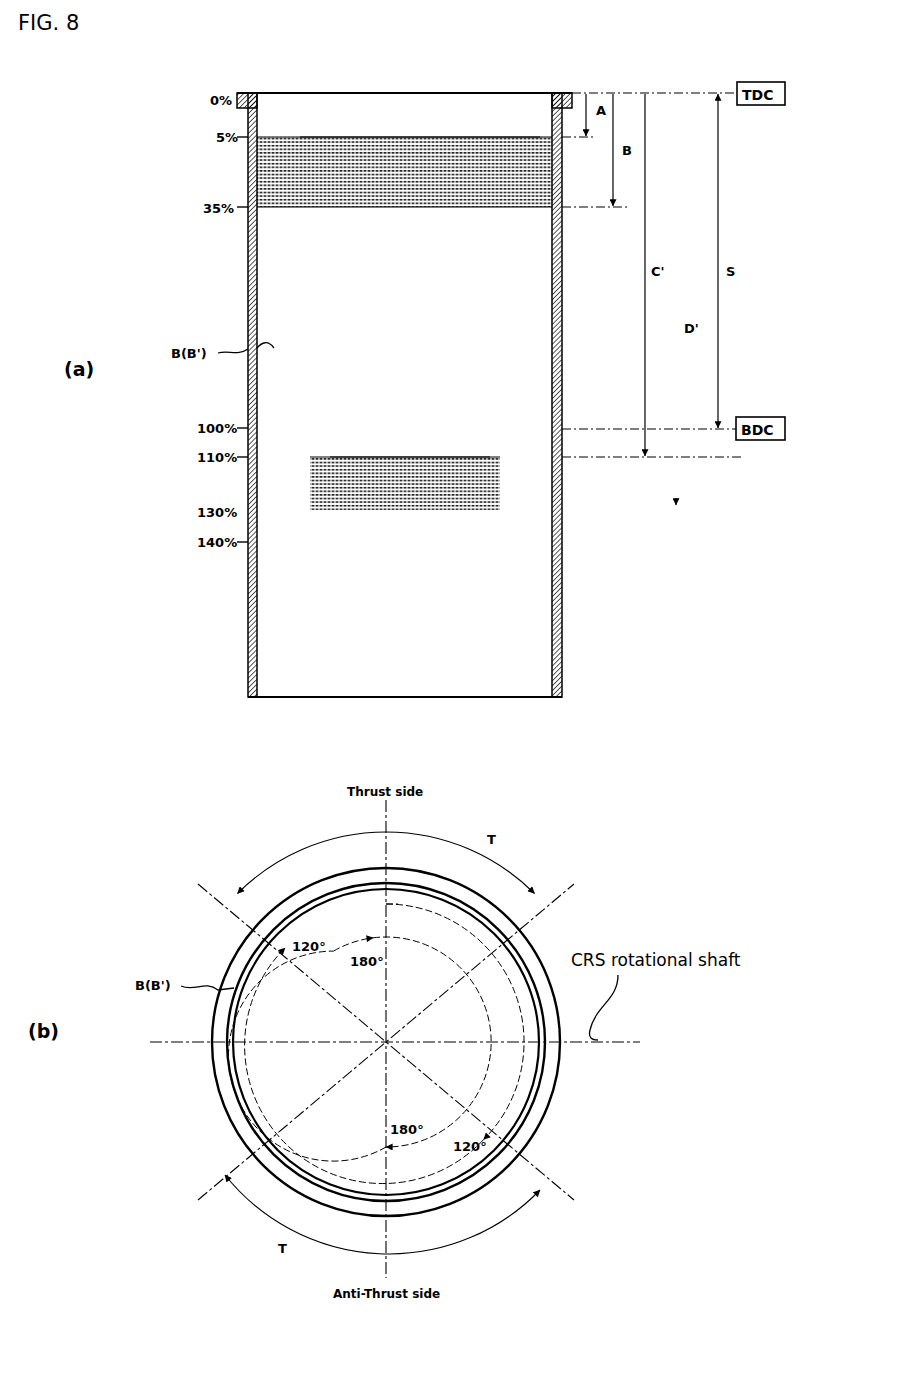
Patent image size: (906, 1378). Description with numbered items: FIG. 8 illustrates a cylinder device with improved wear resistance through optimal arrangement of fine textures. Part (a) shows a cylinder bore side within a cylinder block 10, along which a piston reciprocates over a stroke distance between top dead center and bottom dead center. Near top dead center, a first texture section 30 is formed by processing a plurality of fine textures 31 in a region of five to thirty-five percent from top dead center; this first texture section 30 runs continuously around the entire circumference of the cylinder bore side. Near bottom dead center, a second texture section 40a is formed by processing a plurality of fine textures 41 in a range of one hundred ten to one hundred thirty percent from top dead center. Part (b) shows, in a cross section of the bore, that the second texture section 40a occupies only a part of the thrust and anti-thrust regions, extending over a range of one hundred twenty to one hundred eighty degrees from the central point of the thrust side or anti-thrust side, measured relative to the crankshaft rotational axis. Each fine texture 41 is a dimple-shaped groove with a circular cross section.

The cylinder block 10 is at (248, 262).
The first texture section 30 is at (364, 132).
The fine texture 31 is at (408, 136).
The second texture section 40a is at (344, 451).
The fine texture 41 is at (388, 455).